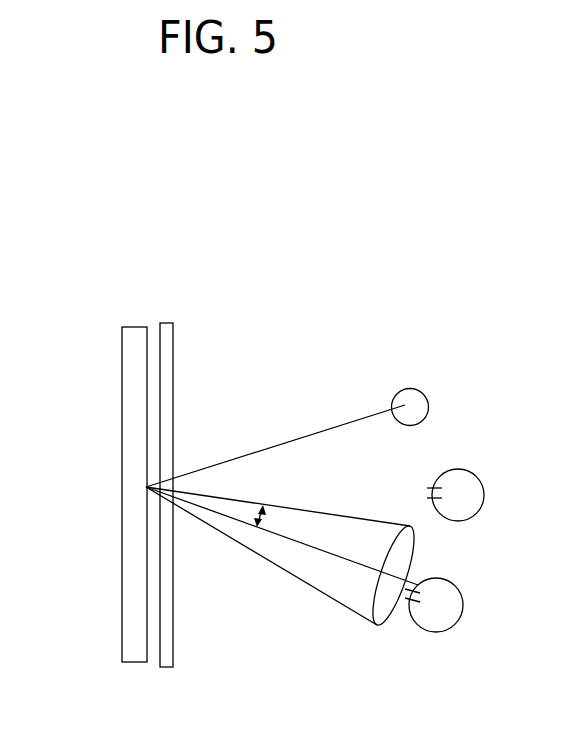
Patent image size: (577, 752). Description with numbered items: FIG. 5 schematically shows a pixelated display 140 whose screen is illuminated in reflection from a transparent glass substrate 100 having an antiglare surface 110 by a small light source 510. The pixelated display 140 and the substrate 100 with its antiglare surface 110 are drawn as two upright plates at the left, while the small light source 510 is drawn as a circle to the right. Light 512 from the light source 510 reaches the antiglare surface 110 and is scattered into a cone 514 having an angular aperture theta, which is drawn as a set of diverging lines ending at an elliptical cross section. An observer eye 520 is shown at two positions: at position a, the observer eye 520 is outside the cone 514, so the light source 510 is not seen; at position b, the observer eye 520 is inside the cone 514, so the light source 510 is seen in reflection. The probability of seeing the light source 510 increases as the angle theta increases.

The transparent glass substrate 100 is at (166, 459).
The antiglare surface 110 is at (182, 386).
The pixelated display 140 is at (118, 386).
The small light source 510 is at (419, 386).
The light 512 is at (275, 442).
The cone 514 is at (284, 558).
The observer eye 520 is at (475, 593).